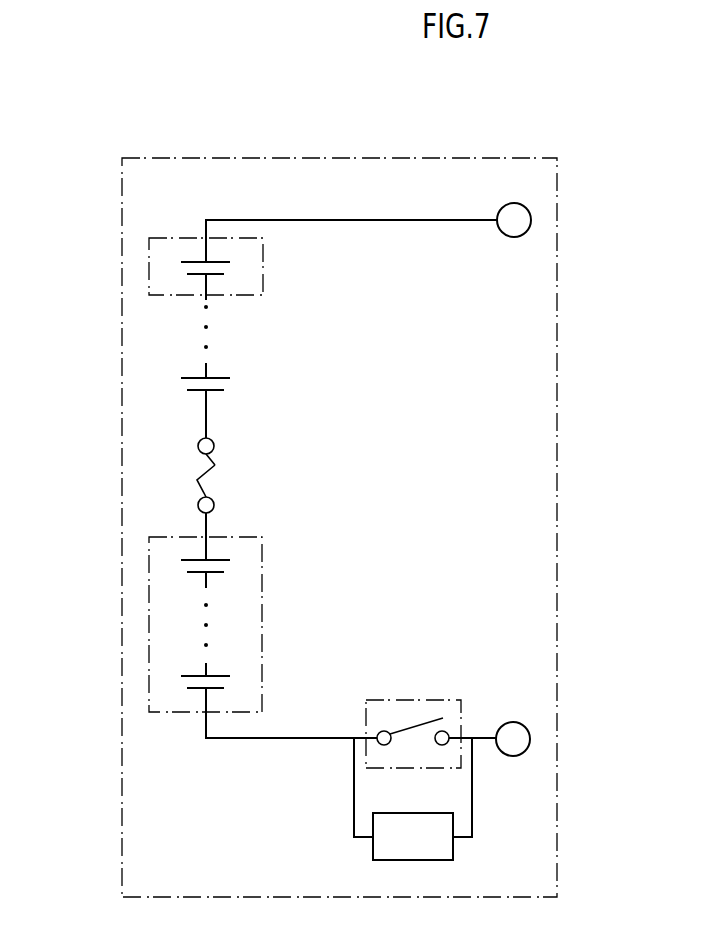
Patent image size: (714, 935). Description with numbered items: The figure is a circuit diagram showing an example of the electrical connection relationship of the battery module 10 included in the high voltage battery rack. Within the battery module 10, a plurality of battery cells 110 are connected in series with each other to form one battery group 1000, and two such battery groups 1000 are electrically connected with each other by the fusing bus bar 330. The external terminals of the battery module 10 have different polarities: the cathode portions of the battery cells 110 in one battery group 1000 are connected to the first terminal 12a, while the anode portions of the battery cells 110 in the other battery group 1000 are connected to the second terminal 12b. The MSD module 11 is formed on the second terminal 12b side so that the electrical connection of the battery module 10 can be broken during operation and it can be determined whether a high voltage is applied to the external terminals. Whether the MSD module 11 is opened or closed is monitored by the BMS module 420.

The battery module 10 is at (330, 157).
The battery cells 110 is at (149, 278).
The fusing bus bar 330 is at (215, 465).
The battery group 1000 is at (149, 612).
The MSD module 11 is at (403, 700).
The BMS module 420 is at (370, 842).
The first terminal 12a is at (531, 218).
The second terminal 12b is at (530, 737).